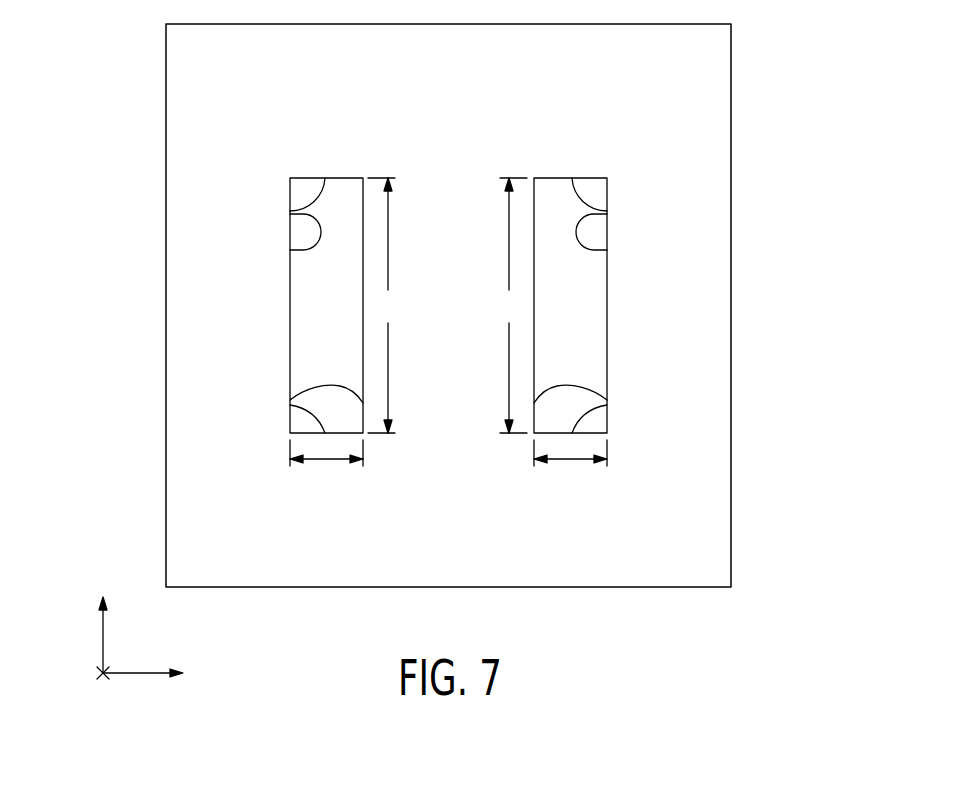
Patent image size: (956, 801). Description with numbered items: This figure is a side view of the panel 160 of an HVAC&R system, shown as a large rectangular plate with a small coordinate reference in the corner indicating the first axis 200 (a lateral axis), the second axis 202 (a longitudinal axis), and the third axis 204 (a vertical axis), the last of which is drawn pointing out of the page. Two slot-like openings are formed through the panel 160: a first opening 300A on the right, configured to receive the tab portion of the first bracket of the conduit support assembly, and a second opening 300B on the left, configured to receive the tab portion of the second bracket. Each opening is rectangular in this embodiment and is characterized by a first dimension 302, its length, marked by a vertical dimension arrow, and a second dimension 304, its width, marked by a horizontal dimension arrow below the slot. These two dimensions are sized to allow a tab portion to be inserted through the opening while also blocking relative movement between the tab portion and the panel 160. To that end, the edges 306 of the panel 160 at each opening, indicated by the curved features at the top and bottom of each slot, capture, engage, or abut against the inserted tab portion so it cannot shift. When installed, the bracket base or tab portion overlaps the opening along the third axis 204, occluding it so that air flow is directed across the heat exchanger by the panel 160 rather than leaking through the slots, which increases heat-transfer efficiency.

The panel 160 is at (205, 72).
The first opening 300A is at (585, 291).
The second opening 300B is at (313, 292).
The first dimension 302 is at (447, 305).
The second dimension 304 is at (328, 459).
The edges 306 is at (290, 214).
The first axis 200 is at (135, 673).
The second axis 202 is at (103, 640).
The third axis 204 is at (101, 675).